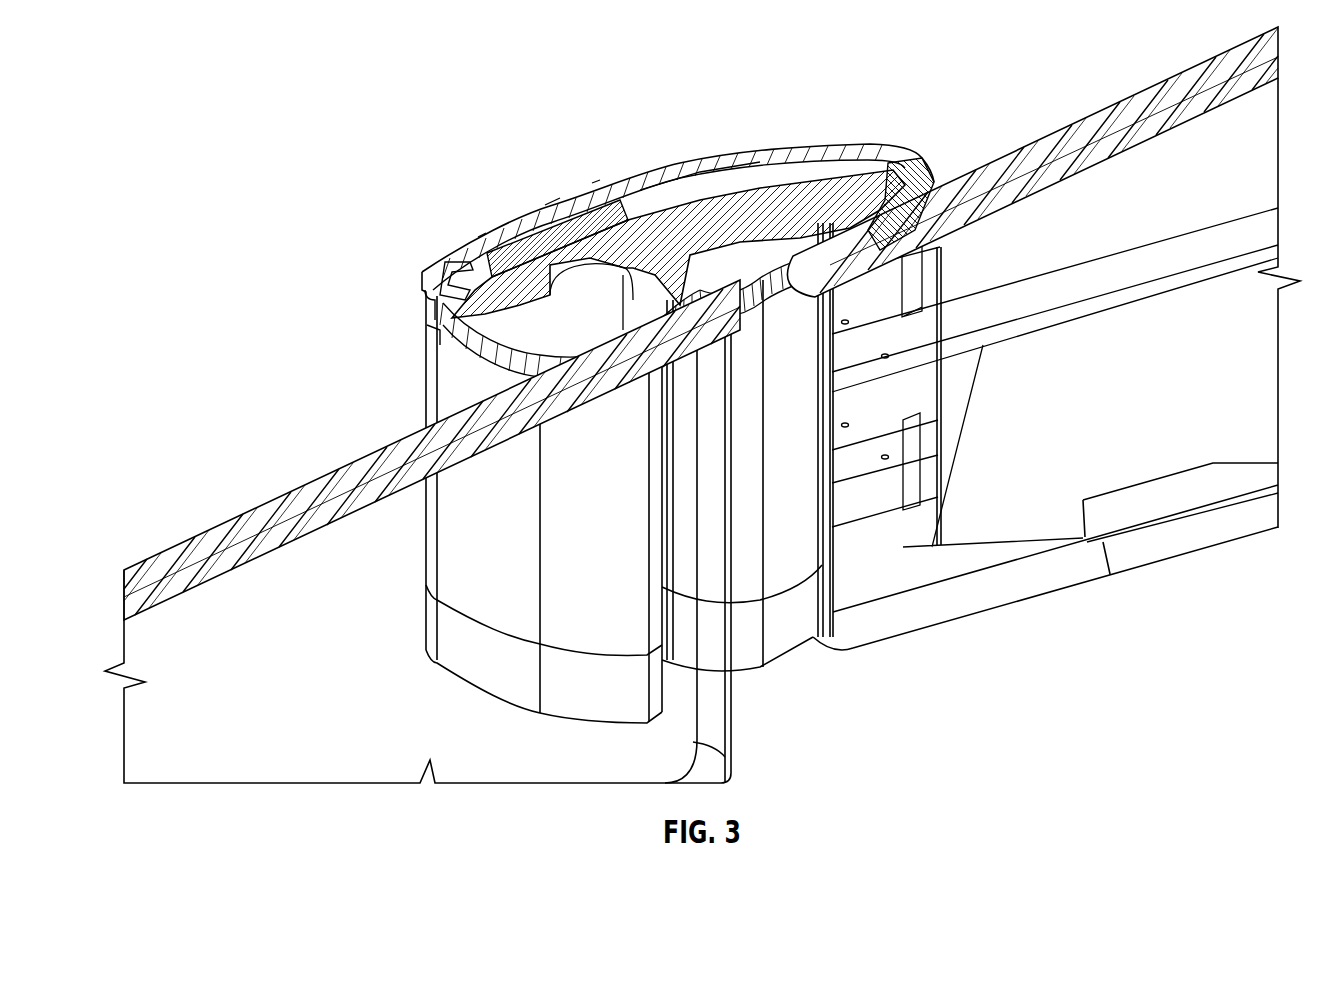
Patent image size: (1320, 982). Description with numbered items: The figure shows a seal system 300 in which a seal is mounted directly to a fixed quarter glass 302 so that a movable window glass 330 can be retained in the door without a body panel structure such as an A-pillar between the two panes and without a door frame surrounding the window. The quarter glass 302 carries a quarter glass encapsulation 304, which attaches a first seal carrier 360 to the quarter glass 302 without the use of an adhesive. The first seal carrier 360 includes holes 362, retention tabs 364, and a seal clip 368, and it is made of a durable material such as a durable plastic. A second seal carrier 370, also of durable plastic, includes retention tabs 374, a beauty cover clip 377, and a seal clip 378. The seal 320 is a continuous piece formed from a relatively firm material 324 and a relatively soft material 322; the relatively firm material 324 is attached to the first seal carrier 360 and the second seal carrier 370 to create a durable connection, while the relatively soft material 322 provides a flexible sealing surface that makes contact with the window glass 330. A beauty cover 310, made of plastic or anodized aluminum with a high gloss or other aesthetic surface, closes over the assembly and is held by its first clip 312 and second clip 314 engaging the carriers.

The seal system 300 is at (213, 222).
The quarter glass 302 is at (1107, 108).
The quarter glass encapsulation 304 is at (938, 177).
The beauty cover 310 is at (742, 152).
The first clip 312 is at (895, 160).
The second clip 314 is at (425, 295).
The seal 320 is at (415, 407).
The relatively soft material 322 is at (497, 350).
The relatively firm material 324 is at (767, 307).
The window glass 330 is at (293, 731).
The first seal carrier 360 is at (767, 205).
The holes 362 is at (888, 356).
The retention tabs 364 is at (552, 203).
The seal clip 368 is at (677, 165).
The second seal carrier 370 is at (592, 183).
The retention tabs 374 is at (537, 227).
The beauty cover clip 377 is at (457, 267).
The seal clip 378 is at (427, 333).